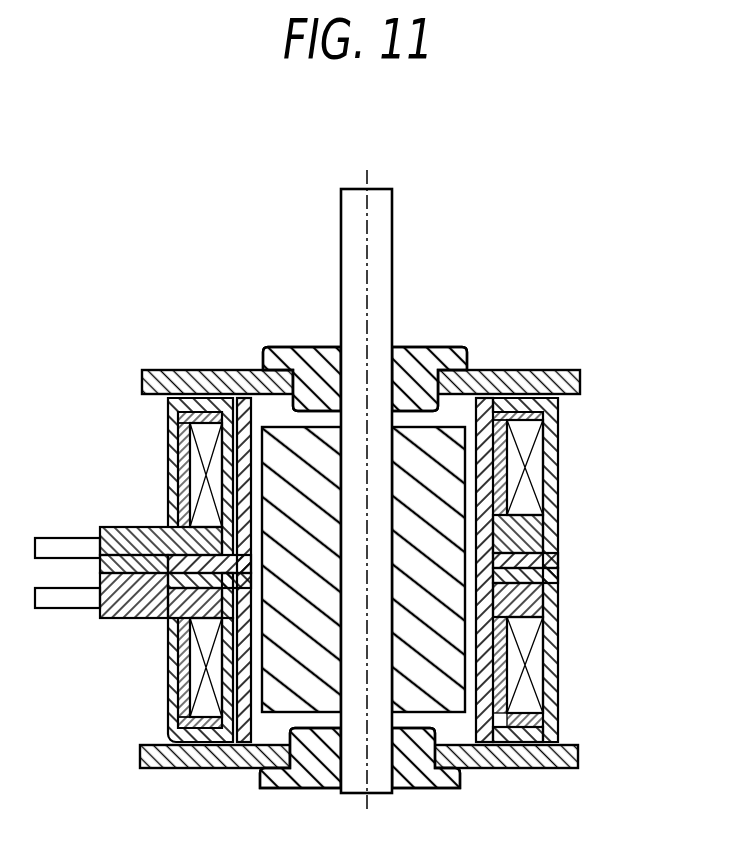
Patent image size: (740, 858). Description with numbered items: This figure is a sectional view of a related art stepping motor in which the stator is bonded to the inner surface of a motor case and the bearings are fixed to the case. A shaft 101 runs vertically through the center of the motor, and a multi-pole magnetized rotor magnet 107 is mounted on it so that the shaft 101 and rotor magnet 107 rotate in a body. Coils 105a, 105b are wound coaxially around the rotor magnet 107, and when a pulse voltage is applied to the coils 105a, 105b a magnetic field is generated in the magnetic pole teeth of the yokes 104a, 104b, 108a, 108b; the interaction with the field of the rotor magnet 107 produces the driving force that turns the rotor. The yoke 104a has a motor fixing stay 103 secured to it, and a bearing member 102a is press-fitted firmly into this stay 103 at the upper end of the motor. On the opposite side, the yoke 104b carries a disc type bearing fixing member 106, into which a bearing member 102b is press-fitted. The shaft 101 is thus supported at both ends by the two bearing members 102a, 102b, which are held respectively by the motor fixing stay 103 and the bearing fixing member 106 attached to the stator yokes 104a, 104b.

The shaft 101 is at (386, 225).
The bearing member 102a is at (293, 347).
The bearing member 102b is at (412, 778).
The motor fixing stay 103 is at (172, 370).
The yoke 104a is at (170, 426).
The yoke 104b is at (170, 722).
The coil 105a is at (192, 490).
The coil 105b is at (190, 656).
The bearing fixing member 106 is at (522, 768).
The rotor magnet 107 is at (454, 477).
The yoke 108a is at (549, 512).
The yoke 108b is at (230, 768).